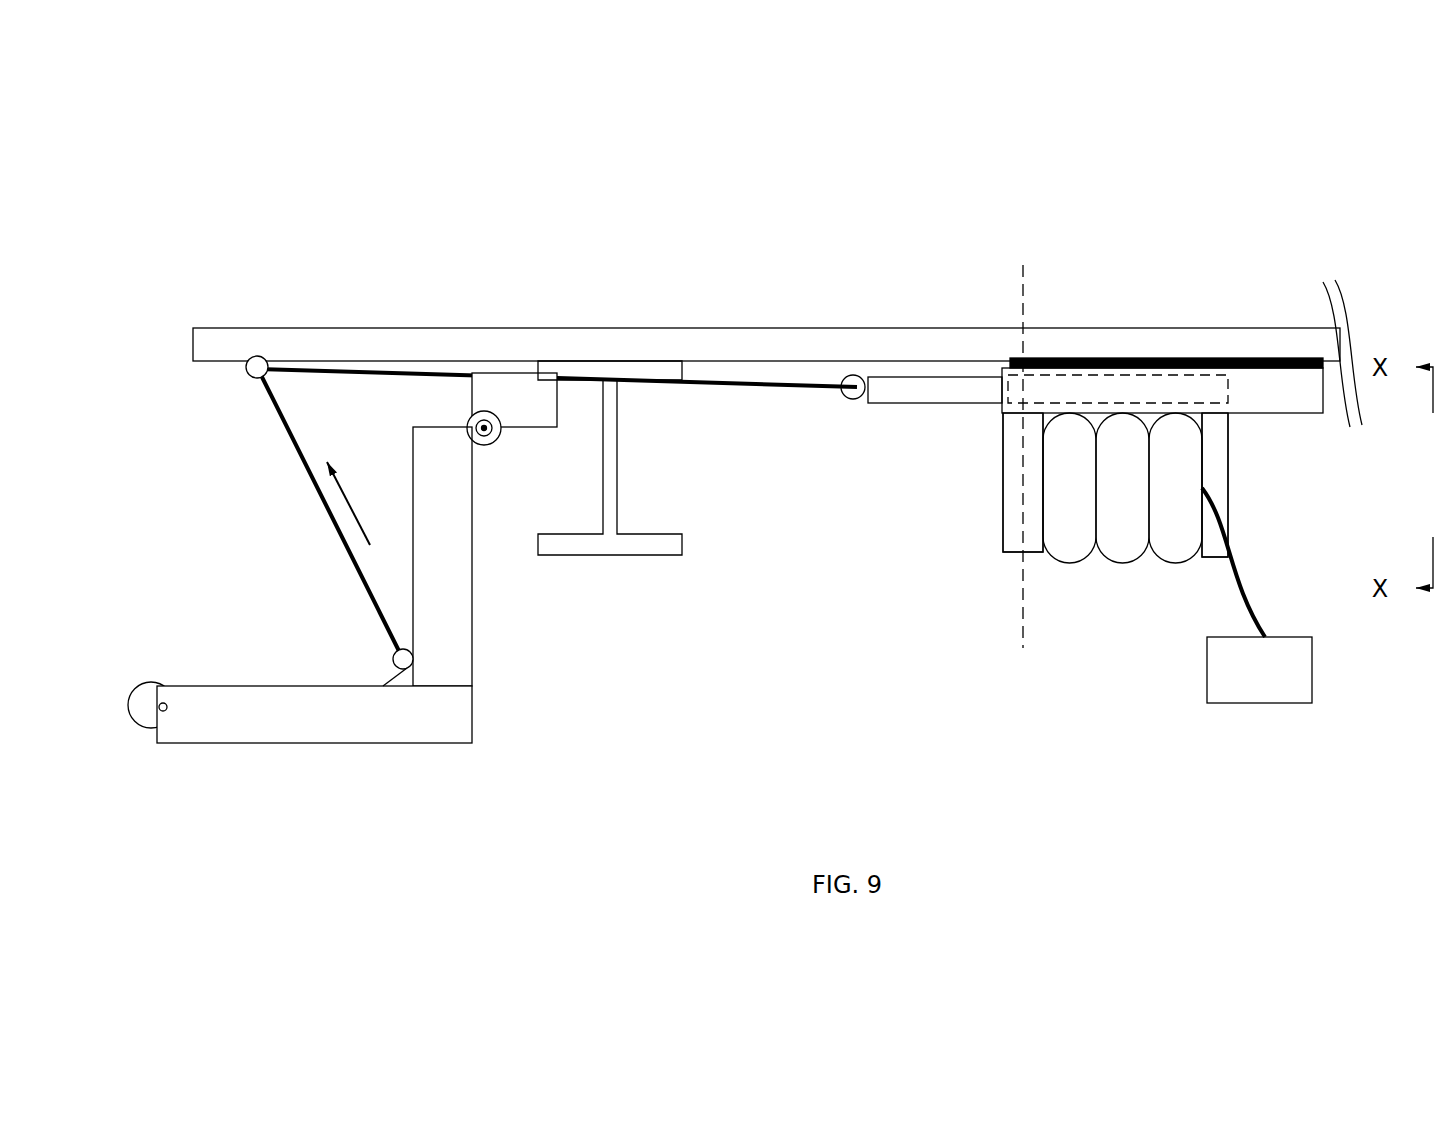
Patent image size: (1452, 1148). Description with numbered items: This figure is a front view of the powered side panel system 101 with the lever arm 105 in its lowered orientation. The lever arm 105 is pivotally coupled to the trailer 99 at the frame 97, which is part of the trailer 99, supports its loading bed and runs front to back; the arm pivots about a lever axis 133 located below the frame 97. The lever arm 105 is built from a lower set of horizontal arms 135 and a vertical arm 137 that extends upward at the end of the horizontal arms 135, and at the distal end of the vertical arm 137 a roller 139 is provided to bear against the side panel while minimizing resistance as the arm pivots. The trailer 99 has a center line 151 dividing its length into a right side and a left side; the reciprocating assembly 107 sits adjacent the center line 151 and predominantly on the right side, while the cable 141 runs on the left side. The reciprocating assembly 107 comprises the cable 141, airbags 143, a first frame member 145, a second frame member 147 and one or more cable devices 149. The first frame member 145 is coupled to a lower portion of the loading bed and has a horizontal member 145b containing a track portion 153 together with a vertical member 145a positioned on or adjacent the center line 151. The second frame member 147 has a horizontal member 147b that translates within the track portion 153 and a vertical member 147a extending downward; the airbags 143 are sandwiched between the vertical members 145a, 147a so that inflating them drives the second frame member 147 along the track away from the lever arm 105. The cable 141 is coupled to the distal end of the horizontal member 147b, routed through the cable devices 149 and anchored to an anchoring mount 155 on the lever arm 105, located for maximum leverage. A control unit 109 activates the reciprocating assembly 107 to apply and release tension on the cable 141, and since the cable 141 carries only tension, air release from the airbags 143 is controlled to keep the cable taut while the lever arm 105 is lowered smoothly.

The powered side panel system 101 is at (866, 184).
The trailer 99 is at (697, 324).
The center line 151 is at (1020, 283).
The track portion 153 is at (1250, 380).
The horizontal member of first frame member 145b is at (1275, 415).
The horizontal member of second frame member 147b is at (860, 403).
The vertical member of first frame member 145a is at (1003, 500).
The vertical member of second frame member 147a is at (1230, 483).
The airbag 143 is at (1122, 488).
The first frame member 145 is at (988, 552).
The reciprocating assembly 107 is at (1095, 600).
The second frame member 147 is at (1209, 573).
The control unit 109 is at (1259, 670).
The cable 141 is at (283, 425).
The cable device 149 is at (248, 375).
The frame 97 is at (514, 400).
The lever axis 133 is at (492, 445).
The horizontal arm 135 is at (473, 595).
The roller 139 is at (148, 683).
The vertical arm 137 is at (335, 745).
The anchoring mount 155 is at (393, 657).
The lever arm 105 is at (228, 780).